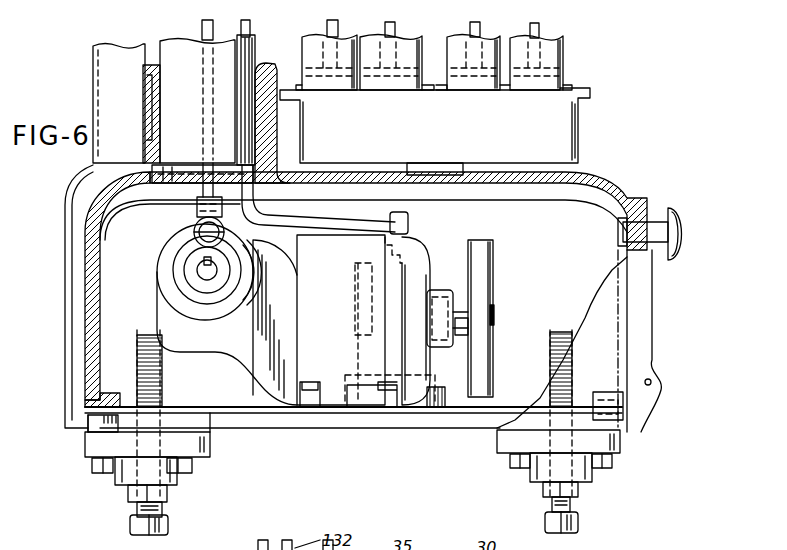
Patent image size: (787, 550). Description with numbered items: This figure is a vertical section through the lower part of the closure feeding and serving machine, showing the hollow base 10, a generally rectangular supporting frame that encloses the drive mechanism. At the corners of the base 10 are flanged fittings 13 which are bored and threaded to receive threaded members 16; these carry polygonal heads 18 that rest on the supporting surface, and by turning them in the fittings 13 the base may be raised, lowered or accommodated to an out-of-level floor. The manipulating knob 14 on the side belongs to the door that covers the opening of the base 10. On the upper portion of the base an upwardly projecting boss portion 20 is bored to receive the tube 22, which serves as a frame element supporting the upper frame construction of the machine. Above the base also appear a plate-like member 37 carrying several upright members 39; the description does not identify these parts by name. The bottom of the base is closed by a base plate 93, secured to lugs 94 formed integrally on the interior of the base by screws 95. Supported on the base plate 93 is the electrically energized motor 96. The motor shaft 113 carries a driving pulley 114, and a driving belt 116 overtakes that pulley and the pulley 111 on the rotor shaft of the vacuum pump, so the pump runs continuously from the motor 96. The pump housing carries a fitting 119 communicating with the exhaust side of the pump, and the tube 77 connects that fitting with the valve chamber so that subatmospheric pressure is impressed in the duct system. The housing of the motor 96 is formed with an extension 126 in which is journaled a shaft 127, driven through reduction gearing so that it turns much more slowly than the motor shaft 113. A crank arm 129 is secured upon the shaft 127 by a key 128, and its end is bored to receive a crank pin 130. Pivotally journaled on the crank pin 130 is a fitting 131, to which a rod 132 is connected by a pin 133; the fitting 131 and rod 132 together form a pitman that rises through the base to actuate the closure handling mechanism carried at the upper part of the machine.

The hollow base 10 is at (70, 283).
The flanged fittings 13 is at (90, 447).
The manipulating knob 14 is at (684, 232).
The threaded members 16 is at (140, 508).
The polygonal heads 18 is at (133, 530).
The boss portion 20 is at (286, 58).
The tube 22 is at (182, 48).
The plate 37 is at (580, 133).
The terminal blocks 39 is at (460, 36).
The tube 77 is at (250, 27).
The base plate 93 is at (447, 413).
The lugs 94 is at (107, 395).
The screws 95 is at (105, 420).
The motor 96 is at (338, 357).
The pulley 111 is at (487, 243).
The motor shaft 113 is at (462, 333).
The driving pulley 114 is at (493, 300).
The driving belt 116 is at (480, 269).
The fitting 119 is at (408, 227).
The extension 126 is at (205, 355).
The shaft 127 is at (200, 270).
The key 128 is at (205, 261).
The crank arm 129 is at (185, 285).
The crank pin 130 is at (195, 238).
The fitting 131 is at (196, 226).
The rod 132 is at (205, 173).
The pin 133 is at (196, 208).